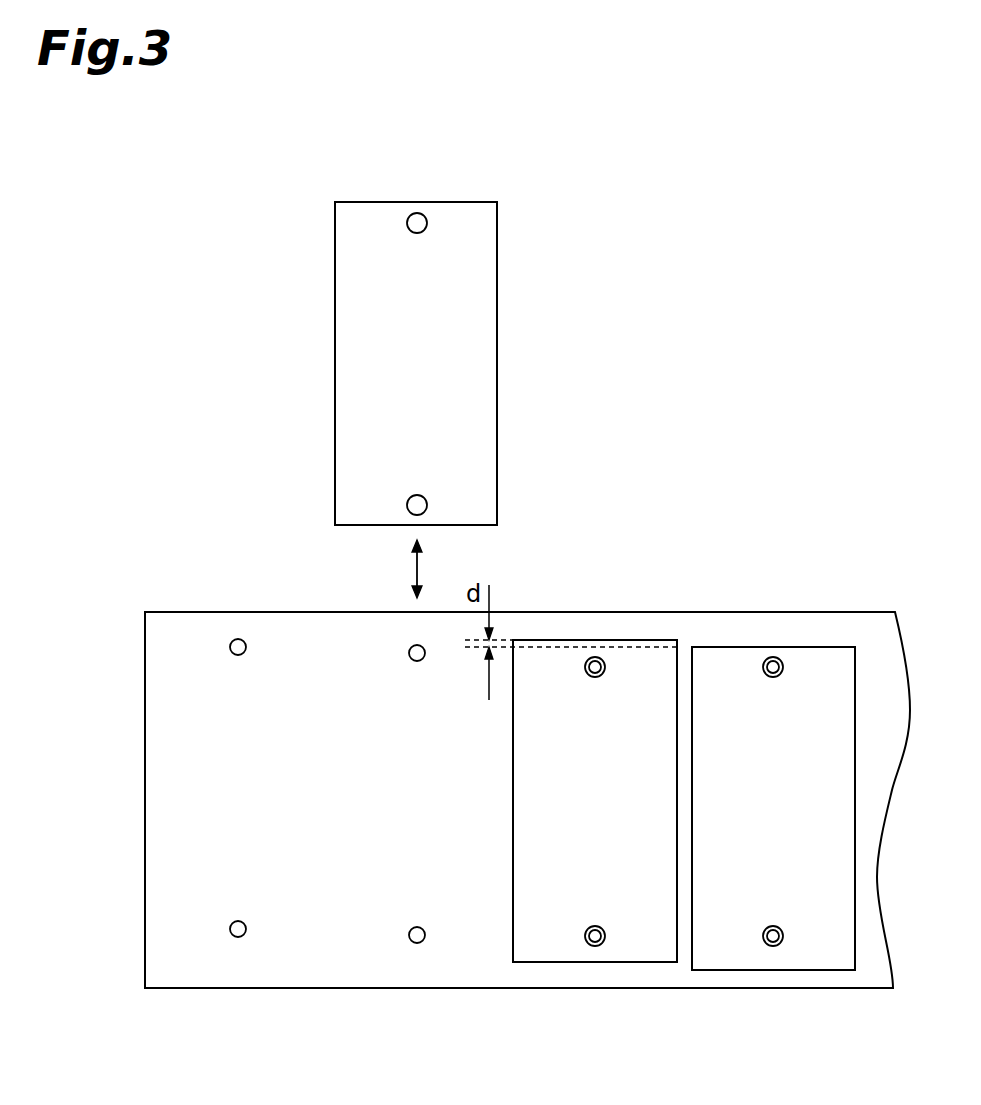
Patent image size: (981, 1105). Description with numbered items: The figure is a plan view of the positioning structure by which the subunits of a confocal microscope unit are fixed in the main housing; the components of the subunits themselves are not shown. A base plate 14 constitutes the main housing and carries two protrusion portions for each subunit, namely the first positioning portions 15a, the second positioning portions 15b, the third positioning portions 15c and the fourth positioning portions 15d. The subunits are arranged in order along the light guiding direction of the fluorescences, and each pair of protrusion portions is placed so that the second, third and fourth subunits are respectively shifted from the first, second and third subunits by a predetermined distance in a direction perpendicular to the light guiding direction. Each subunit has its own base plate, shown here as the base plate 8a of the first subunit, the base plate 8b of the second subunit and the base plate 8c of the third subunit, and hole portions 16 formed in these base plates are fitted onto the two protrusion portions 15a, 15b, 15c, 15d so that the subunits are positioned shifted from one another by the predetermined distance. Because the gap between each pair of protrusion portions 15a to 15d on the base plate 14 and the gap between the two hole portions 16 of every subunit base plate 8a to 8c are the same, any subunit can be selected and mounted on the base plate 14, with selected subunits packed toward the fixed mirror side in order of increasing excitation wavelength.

The base plate 14 is at (157, 803).
The base plate of the first subunit 8a is at (722, 950).
The base plate of the second subunit 8b is at (538, 948).
The base plate of the third subunit 8c is at (472, 210).
The first positioning portion 15a is at (773, 657).
The second positioning portion 15b is at (595, 657).
The third positioning portion 15c is at (410, 647).
The fourth positioning portion 15d is at (238, 639).
The hole portion 16 is at (410, 215).